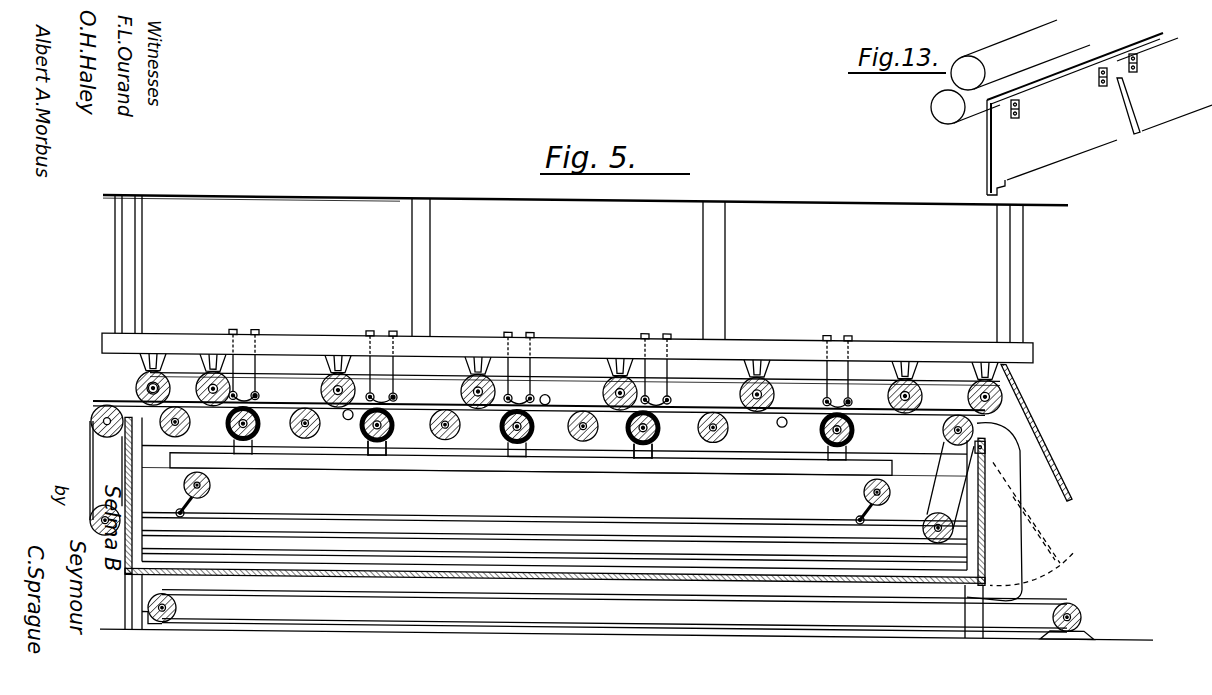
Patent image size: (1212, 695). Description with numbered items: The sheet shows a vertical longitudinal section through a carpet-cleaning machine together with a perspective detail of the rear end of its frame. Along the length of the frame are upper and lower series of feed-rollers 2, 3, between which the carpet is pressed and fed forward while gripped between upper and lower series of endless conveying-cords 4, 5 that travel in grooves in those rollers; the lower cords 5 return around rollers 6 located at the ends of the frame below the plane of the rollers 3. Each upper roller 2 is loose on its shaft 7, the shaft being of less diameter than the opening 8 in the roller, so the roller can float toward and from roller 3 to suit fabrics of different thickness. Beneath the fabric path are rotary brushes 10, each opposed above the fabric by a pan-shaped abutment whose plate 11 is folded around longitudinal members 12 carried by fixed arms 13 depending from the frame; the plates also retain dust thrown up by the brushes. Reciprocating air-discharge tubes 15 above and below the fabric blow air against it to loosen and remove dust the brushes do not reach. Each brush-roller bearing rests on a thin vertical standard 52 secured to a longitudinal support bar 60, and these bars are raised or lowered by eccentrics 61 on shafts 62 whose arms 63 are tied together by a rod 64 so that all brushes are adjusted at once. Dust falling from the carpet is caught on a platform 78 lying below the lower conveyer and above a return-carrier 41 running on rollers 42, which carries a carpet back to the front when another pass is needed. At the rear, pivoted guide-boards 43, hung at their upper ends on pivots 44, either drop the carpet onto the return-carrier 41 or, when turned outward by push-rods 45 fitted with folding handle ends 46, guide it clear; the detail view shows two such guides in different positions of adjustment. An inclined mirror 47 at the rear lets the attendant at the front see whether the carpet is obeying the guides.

In FIG. 13, the upper feed-roller 2 is at (1020, 55).
In FIG. 5, the upper feed-roller 2 is at (163, 372).
In FIG. 13, the lower feed-roller 3 is at (940, 114).
In FIG. 5, the lower feed-roller 3 is at (93, 418).
In FIG. 5, the upper conveying-cords 4 is at (283, 371).
In FIG. 5, the lower conveying-cords 5 is at (522, 475).
In FIG. 5, the return roller 6 is at (91, 521).
In FIG. 5, the shaft 7 is at (136, 391).
In FIG. 5, the shaft-opening 8 is at (138, 382).
In FIG. 5, the rotary brush 10 is at (243, 440).
In FIG. 5, the abutment plate 11 is at (561, 395).
In FIG. 5, the longitudinal frame member 12 is at (400, 397).
In FIG. 5, the fixed arm 13 is at (258, 388).
In FIG. 5, the air-discharge tube 15 is at (548, 390).
In FIG. 5, the return-carrier 41 is at (571, 626).
In FIG. 5, the return-carrier roller 42 is at (163, 622).
In FIG. 13, the guide-board 43 is at (1099, 114).
In FIG. 5, the guide-board 43 is at (985, 535).
In FIG. 13, the pivot 44 is at (1021, 110).
In FIG. 5, the pivot 44 is at (987, 440).
In FIG. 5, the push-rod 45 is at (300, 468).
In FIG. 5, the handle end 46 is at (118, 468).
In FIG. 5, the mirror 47 is at (1042, 445).
In FIG. 5, the standard 52 is at (440, 462).
In FIG. 5, the support 60 is at (592, 468).
In FIG. 5, the eccentric 61 is at (208, 489).
In FIG. 5, the eccentric shaft 62 is at (185, 486).
In FIG. 5, the arm 63 is at (176, 511).
In FIG. 5, the connecting rod 64 is at (500, 511).
In FIG. 5, the platform 78 is at (555, 564).